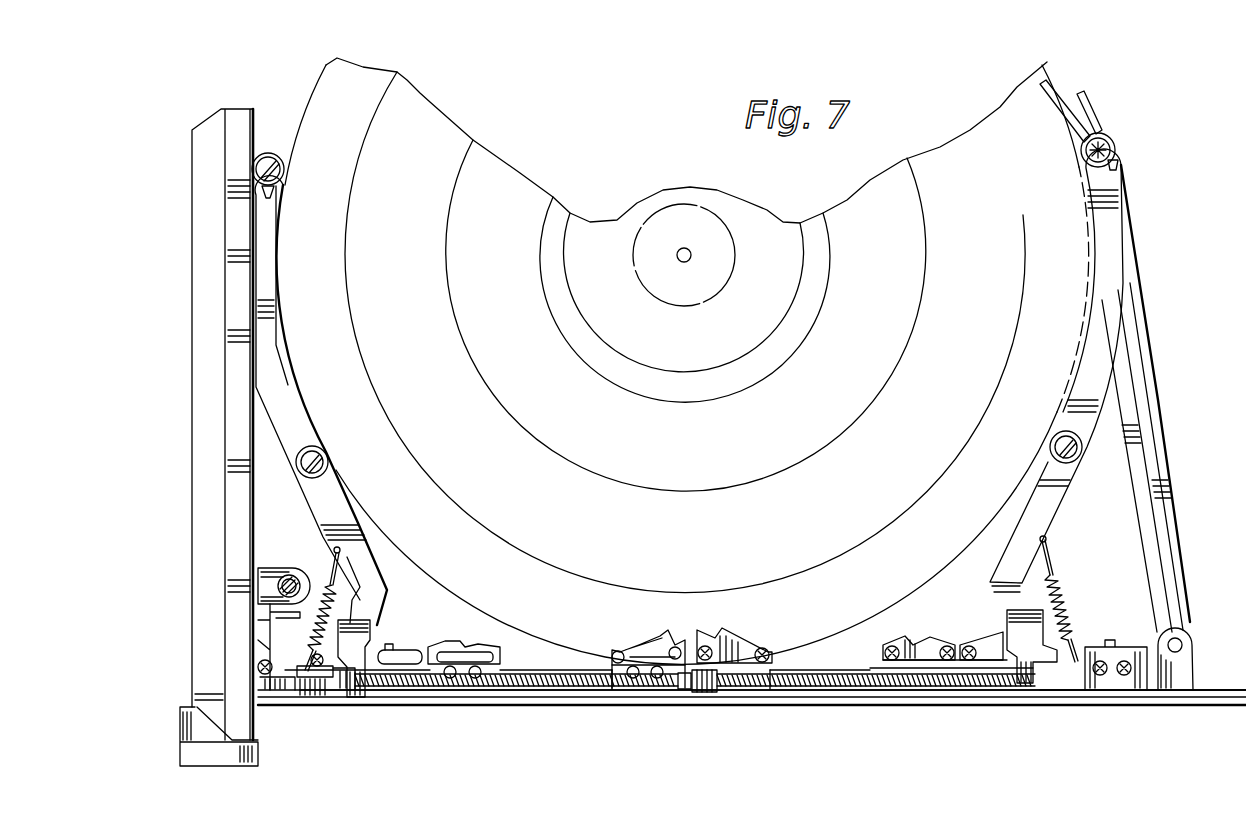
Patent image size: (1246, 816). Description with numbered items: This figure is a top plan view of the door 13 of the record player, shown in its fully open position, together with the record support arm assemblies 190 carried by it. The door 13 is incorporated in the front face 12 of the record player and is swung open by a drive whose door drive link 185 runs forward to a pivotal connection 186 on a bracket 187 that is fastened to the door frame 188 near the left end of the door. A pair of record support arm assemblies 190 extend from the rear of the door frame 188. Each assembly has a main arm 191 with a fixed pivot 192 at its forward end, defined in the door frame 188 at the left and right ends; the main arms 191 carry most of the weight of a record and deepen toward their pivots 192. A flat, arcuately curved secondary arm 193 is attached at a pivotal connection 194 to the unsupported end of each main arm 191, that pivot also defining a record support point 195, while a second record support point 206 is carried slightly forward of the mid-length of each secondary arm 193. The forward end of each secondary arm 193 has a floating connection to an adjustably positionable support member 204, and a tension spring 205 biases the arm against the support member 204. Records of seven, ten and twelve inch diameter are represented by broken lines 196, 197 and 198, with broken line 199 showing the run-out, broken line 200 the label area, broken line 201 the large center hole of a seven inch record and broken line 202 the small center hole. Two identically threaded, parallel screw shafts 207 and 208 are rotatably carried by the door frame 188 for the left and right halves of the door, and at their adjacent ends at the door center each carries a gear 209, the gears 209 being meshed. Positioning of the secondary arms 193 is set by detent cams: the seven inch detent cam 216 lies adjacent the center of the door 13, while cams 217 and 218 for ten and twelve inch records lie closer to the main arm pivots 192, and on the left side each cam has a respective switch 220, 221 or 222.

The front face 12 is at (252, 258).
The door 13 is at (588, 706).
The door drive link 185 is at (262, 578).
The pivotal connection 186 is at (296, 578).
The bracket 187 is at (268, 640).
The door frame 188 is at (1048, 692).
The record support arm assembly 190 is at (270, 137).
The main arm 191 is at (1184, 526).
The fixed pivot 192 is at (1183, 640).
The secondary arm 193 is at (290, 330).
The pivotal connection 194 is at (256, 163).
The record support point 195 is at (265, 188).
The broken line representing 7 inch record 196 is at (924, 291).
The broken line representing 10 inch record 197 is at (1010, 346).
The broken line representing 12 inch record 198 is at (1092, 268).
The broken line representing record run-out 199 is at (806, 316).
The broken line representing label area 200 is at (831, 250).
The broken line representing large diameter center hole 201 is at (736, 256).
The broken line representing small diameter center hole 202 is at (690, 250).
The support member 204 is at (372, 620).
The tension spring 205 is at (340, 590).
The second record support point 206 is at (332, 464).
The screw shaft 207 is at (538, 684).
The screw shaft 208 is at (856, 690).
The gear 209 is at (696, 694).
The 7 inch record positioning detent cam 216 is at (700, 632).
The positioning detent cam 217 is at (478, 645).
The positioning detent cam 218 is at (380, 650).
The switch 220 is at (652, 680).
The switch 221 is at (468, 666).
The switch 222 is at (392, 668).